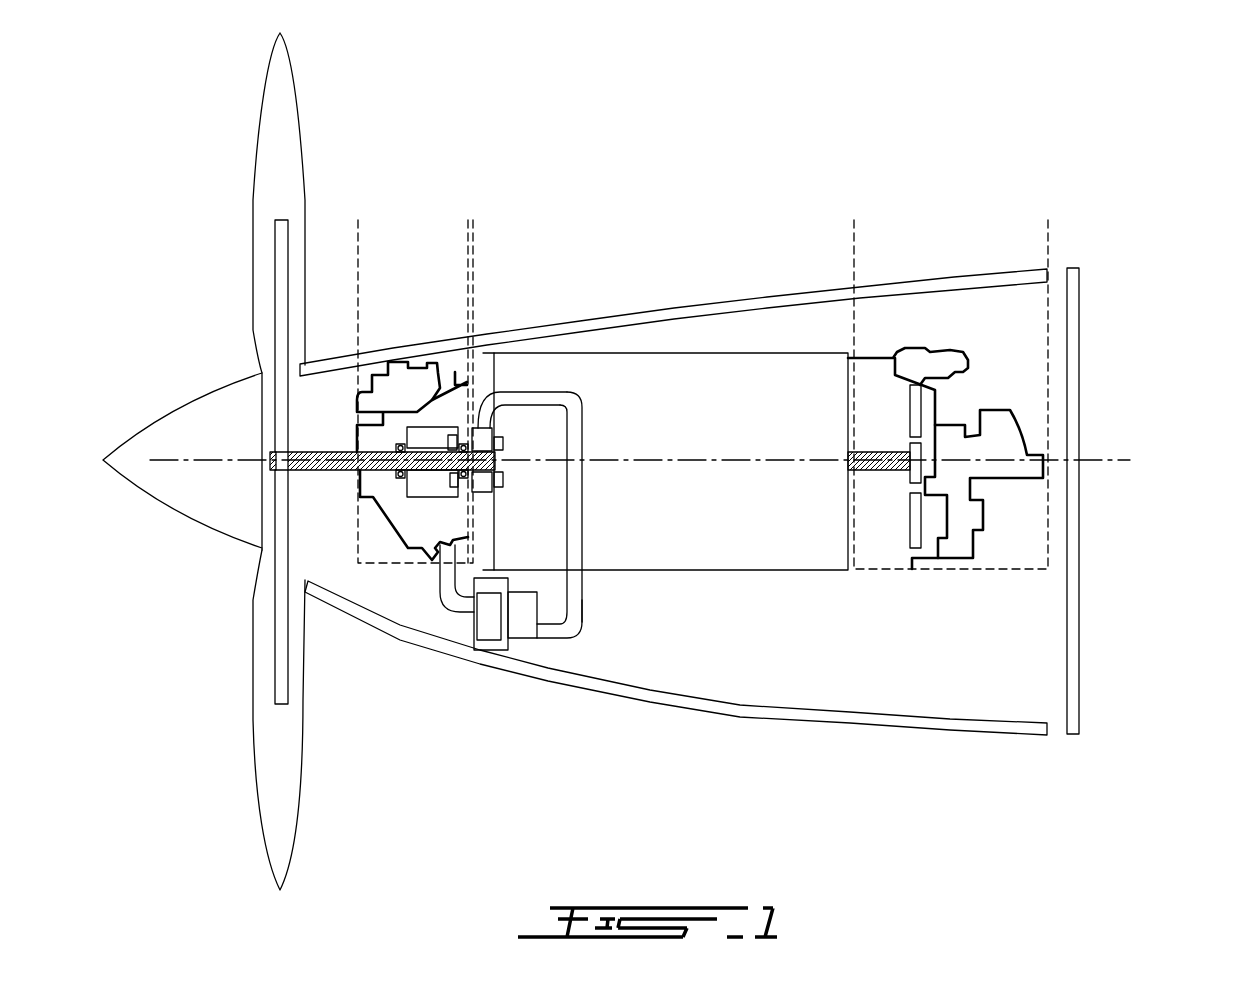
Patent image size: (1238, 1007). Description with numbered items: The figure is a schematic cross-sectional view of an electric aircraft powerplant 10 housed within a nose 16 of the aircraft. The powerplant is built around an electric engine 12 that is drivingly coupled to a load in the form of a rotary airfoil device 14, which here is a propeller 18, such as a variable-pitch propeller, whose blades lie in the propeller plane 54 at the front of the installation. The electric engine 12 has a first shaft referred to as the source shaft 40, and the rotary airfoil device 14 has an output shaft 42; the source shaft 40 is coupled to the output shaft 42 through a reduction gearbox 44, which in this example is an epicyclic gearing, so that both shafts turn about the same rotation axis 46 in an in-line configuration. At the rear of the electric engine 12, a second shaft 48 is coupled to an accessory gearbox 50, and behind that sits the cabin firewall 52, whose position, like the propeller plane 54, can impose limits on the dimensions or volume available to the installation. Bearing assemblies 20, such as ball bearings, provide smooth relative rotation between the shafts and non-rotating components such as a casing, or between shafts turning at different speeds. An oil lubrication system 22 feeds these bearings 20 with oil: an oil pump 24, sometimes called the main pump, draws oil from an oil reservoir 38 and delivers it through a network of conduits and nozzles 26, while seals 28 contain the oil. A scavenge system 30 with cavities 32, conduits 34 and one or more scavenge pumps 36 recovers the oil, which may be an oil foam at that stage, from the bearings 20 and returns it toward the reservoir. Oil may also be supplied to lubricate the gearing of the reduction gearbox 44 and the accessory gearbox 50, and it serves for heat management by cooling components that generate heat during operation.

The electric aircraft powerplant 10 is at (786, 226).
The electric engine 12 is at (655, 352).
The rotary airfoil device 14 is at (268, 433).
The nose 16 is at (740, 710).
The propeller 18 is at (262, 226).
The bearing assemblies 20 is at (478, 428).
The oil lubrication system 22 is at (440, 586).
The oil pump 24 is at (483, 627).
The network of conduits and nozzles 26 is at (407, 560).
The seals 28 is at (448, 426).
The scavenge system 30 is at (585, 588).
The cavities 32 is at (483, 358).
The conduits 34 is at (582, 637).
The scavenge pumps 36 is at (523, 640).
The oil reservoir 38 is at (482, 650).
The source shaft 40 is at (510, 392).
The output shaft 42 is at (332, 452).
The reduction gearbox 44 is at (400, 482).
The rotation axis 46 is at (182, 462).
The second shaft 48 is at (893, 470).
The accessory gearbox 50 is at (915, 400).
The cabin firewall 52 is at (1090, 358).
The propeller plane 54 is at (283, 648).